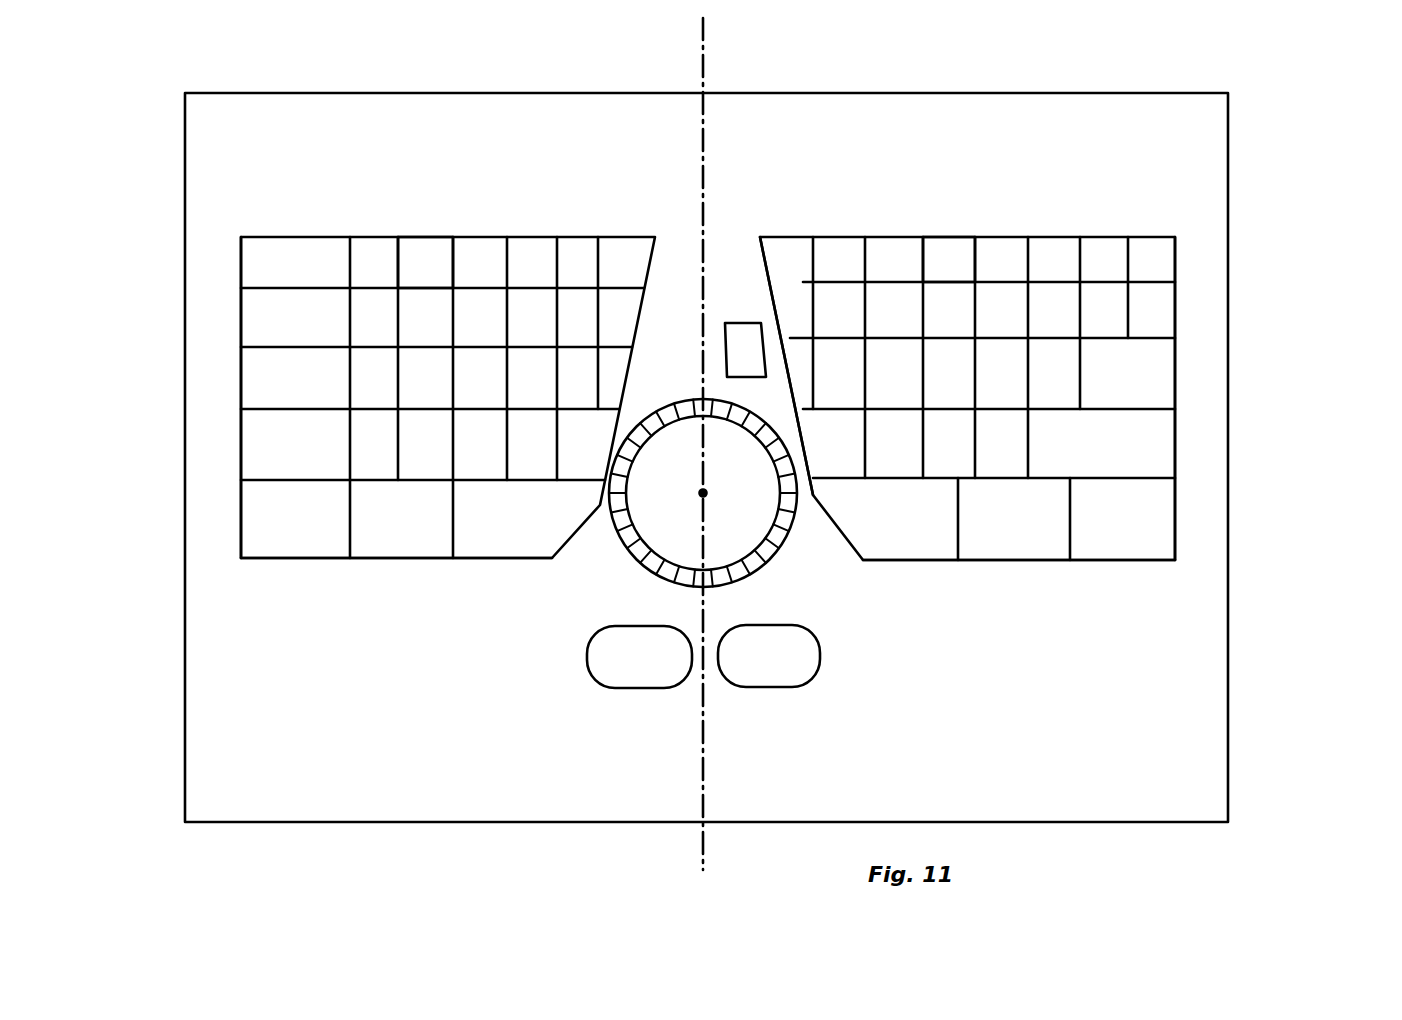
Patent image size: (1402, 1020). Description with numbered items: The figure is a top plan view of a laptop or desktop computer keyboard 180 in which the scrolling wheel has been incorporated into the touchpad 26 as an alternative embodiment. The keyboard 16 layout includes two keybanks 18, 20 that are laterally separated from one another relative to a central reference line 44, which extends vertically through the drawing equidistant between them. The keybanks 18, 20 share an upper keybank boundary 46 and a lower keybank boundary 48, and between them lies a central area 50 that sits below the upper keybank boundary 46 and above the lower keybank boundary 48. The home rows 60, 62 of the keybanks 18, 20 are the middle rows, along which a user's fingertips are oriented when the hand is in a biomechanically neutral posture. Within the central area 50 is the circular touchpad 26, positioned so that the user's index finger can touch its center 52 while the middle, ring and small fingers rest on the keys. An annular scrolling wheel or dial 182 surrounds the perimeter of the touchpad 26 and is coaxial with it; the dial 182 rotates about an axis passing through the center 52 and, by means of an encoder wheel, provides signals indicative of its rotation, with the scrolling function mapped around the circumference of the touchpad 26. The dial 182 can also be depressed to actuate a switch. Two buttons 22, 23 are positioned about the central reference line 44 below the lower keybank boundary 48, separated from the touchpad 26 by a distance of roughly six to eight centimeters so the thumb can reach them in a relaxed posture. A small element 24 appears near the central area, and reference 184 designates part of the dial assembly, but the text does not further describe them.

The keyboard 180 is at (1273, 206).
The central reference line 44 is at (705, 77).
The keyboard 16 is at (222, 265).
The keybank 18 is at (284, 237).
The keybank 20 is at (1100, 237).
The home row 60 is at (240, 376).
The home row 62 is at (1177, 355).
The upper keybank boundary 46 is at (428, 236).
The lower keybank boundary 48 is at (342, 560).
The central area 50 is at (755, 275).
The sensor block 24 is at (727, 320).
The touchpad 26 is at (652, 566).
The annular scrolling wheel or dial 182 is at (690, 585).
The ring spokes 184 is at (760, 565).
The center of touchpad 52 is at (703, 493).
The button 22 is at (588, 660).
The button 23 is at (820, 662).